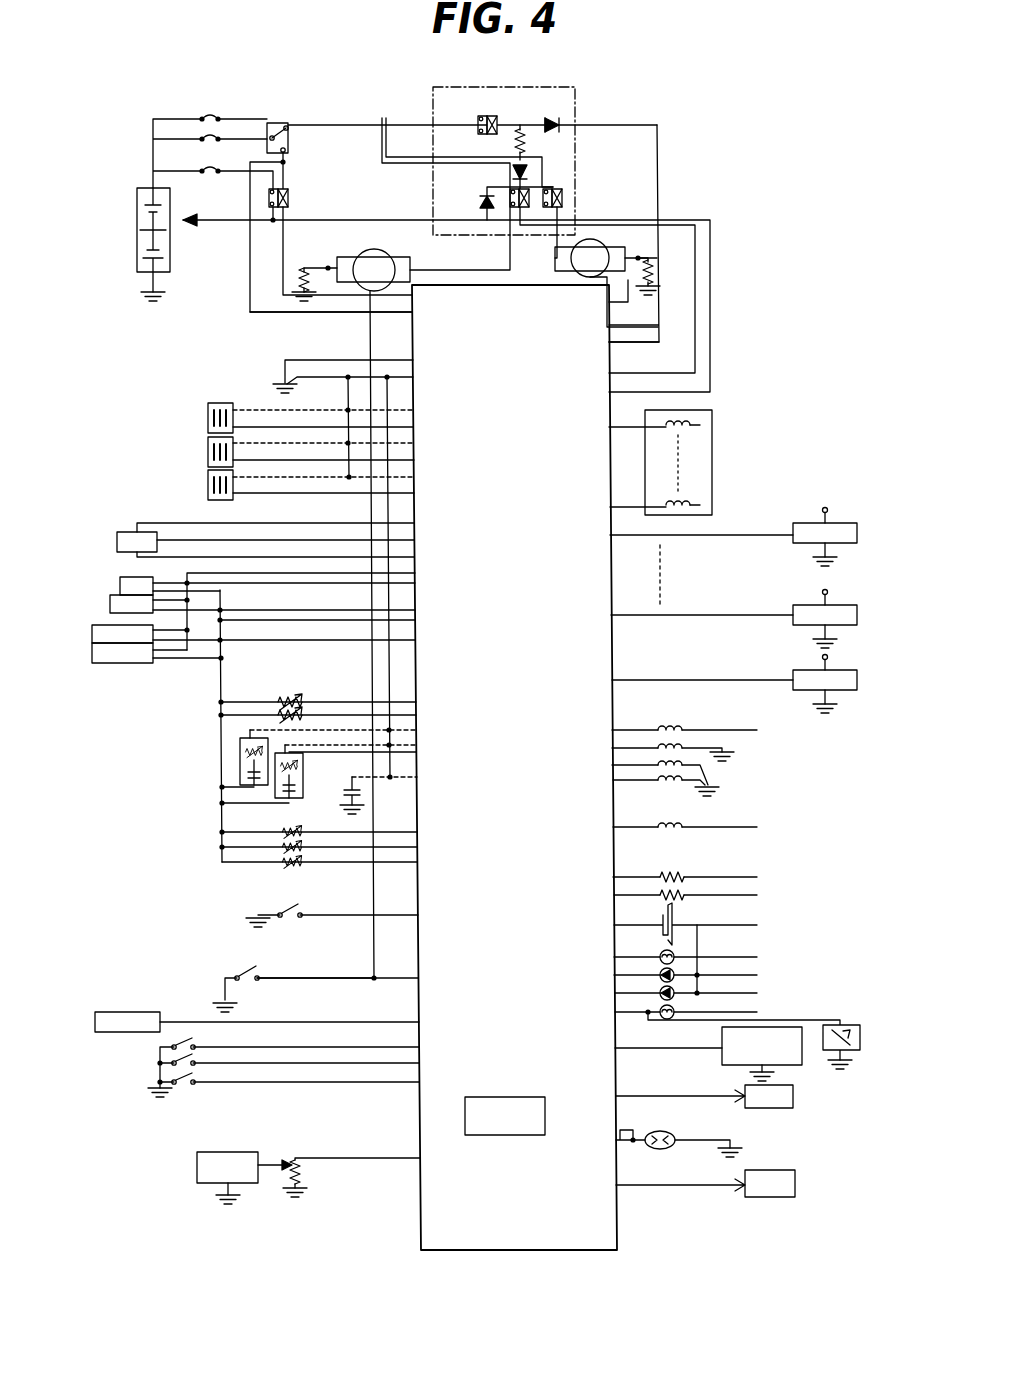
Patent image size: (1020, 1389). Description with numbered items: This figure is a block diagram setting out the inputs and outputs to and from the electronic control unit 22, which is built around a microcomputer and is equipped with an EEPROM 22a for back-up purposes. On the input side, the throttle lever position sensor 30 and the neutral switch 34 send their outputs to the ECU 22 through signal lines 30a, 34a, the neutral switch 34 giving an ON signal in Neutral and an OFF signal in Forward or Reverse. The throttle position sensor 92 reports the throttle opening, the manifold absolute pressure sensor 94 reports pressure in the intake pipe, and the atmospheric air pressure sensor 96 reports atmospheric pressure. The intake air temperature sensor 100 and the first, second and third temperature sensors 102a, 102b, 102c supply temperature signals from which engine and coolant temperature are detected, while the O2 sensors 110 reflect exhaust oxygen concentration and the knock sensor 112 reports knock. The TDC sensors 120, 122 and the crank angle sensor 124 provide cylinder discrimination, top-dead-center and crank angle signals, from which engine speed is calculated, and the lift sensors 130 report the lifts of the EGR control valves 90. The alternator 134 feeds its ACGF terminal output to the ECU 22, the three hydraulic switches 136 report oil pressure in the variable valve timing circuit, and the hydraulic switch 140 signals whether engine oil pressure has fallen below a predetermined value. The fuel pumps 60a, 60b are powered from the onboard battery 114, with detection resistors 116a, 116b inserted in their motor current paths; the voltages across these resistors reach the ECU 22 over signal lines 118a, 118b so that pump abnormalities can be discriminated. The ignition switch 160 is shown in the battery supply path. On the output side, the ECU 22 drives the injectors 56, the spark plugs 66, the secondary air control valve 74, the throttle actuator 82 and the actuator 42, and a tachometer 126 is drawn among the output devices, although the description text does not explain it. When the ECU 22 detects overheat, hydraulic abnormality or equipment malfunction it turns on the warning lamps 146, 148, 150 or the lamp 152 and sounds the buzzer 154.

The electronic control unit 22 is at (553, 712).
The EEPROM 22a is at (508, 1097).
The throttle lever position sensor 30 is at (258, 1152).
The signal line 30a is at (340, 1157).
The neutral switch 34 is at (242, 968).
The signal line 34a is at (305, 978).
The actuator (electric motor) 42 is at (782, 1106).
The injector 56 is at (708, 410).
The fuel pump 60a is at (390, 257).
The fuel pump 60b is at (606, 244).
The spark plug 66 is at (802, 605).
The electronic secondary air control valve (EACV) 74 is at (795, 670).
The actuator (stepper motor) 82 is at (782, 1193).
The EGR control valve 90 is at (668, 793).
The throttle position sensor 92 is at (108, 605).
The manifold absolute pressure sensor 94 is at (116, 541).
The atmospheric air pressure sensor 96 is at (118, 582).
The intake air temperature sensor 100 is at (280, 714).
The first temperature sensor 102a is at (282, 832).
The second temperature sensor 102b is at (282, 846).
The third temperature sensor 102c is at (300, 868).
The O2 sensor 110 is at (240, 763).
The knock sensor 112 is at (345, 790).
The onboard battery 114 is at (137, 235).
The detection resistor 116a is at (304, 267).
The detection resistor 116b is at (658, 258).
The signal line 118a is at (389, 300).
The signal line 118b is at (625, 302).
The TDC sensor 120 is at (206, 418).
The TDC sensor 122 is at (206, 452).
The crank angle sensor 124 is at (206, 485).
The tachometer 126 is at (720, 1038).
The lift sensor 130 is at (90, 658).
The alternator 134 is at (138, 1012).
The hydraulic switch 136 is at (217, 1091).
The hydraulic switch 140 is at (276, 908).
The warning lamp 146 is at (663, 954).
The warning lamp 148 is at (688, 975).
The warning lamp 150 is at (688, 994).
The lamp 152 is at (688, 1014).
The buzzer 154 is at (678, 912).
The ignition switch 160 is at (280, 118).